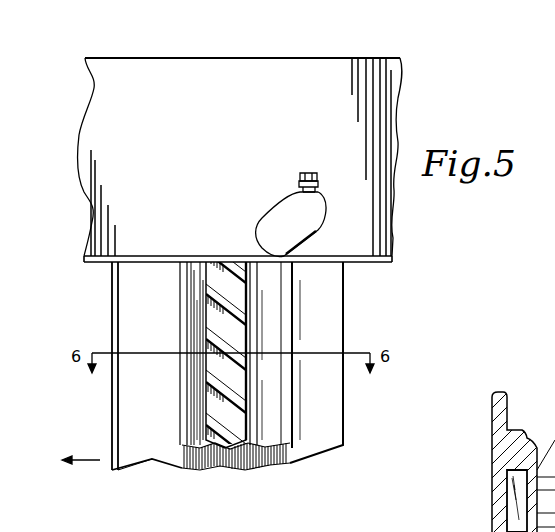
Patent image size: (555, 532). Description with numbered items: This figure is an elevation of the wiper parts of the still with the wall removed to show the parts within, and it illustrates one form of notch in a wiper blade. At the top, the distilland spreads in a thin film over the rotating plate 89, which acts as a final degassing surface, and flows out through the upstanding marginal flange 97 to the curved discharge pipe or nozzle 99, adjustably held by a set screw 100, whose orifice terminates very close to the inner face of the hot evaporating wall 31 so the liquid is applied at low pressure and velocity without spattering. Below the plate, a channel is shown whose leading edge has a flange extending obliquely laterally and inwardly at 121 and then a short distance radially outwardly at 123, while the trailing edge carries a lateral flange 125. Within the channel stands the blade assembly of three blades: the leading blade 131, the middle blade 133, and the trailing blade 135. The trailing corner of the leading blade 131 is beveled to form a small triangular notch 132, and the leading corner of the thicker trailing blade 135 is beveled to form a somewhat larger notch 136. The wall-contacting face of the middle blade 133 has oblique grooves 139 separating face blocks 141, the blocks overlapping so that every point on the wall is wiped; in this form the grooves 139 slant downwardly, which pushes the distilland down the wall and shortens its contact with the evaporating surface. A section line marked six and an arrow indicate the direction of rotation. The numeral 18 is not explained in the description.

The upstanding marginal flange 97 is at (337, 65).
The plate 89 is at (390, 262).
The curved discharge pipe or nozzle 99 is at (266, 223).
The set screw 100 is at (301, 175).
The oblique lateral flange 121 is at (155, 458).
The radially outward flange portion 123 is at (113, 405).
The trailing lateral flange 125 is at (333, 318).
The leading wiper blade 131 is at (183, 372).
The triangular notch 132 is at (197, 420).
The middle wiper blade 133 is at (222, 437).
The trailing wiper blade 135 is at (285, 420).
The triangular notch 136 is at (263, 388).
The oblique groove or notch 139 is at (210, 403).
The face block or contact portion 141 is at (212, 328).
The evaporating wall 31 is at (507, 416).
The member 18 is at (546, 338).